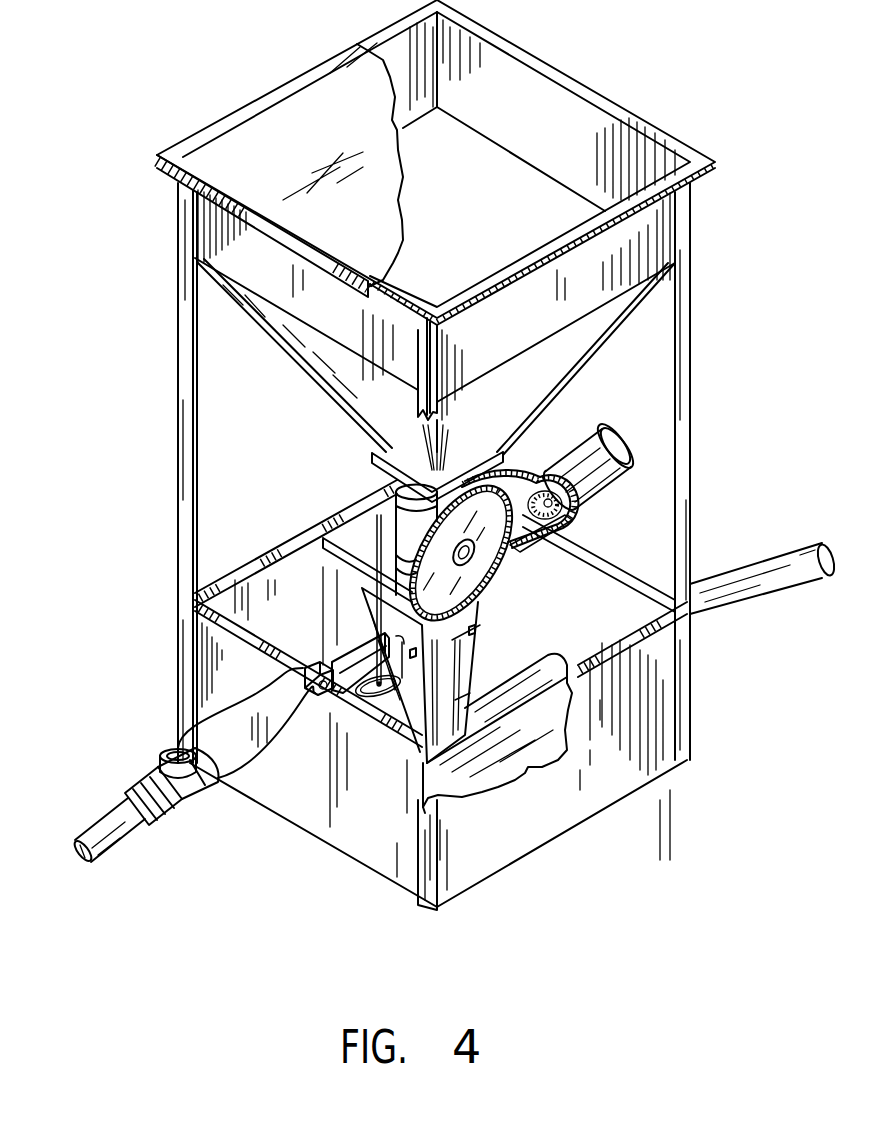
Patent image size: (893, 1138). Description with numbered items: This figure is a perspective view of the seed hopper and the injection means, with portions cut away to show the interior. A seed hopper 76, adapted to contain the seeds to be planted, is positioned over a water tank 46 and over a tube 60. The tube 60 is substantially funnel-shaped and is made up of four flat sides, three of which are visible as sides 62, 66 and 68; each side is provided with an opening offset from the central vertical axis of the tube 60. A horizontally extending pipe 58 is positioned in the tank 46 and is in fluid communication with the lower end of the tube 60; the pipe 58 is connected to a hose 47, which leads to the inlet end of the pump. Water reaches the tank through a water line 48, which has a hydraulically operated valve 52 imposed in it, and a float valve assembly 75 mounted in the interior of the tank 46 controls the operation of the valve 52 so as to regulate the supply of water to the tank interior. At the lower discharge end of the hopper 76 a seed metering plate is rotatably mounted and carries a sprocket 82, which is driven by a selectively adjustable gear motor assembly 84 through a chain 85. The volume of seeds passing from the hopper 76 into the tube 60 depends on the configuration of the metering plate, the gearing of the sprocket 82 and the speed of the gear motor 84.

The water tank 46 is at (577, 786).
The hose 47 is at (757, 562).
The water line 48 is at (116, 845).
The hydraulically operated valve 52 is at (198, 788).
The horizontally extending pipe 58 is at (497, 703).
The tube 60 is at (484, 611).
The flat side 62 is at (460, 660).
The flat side 66 is at (368, 592).
The flat side 68 is at (367, 618).
The float valve assembly 75 is at (321, 696).
The seed hopper 76 is at (563, 348).
The sprocket 82 is at (470, 577).
The gear motor assembly 84 is at (600, 467).
The chain 85 is at (510, 484).